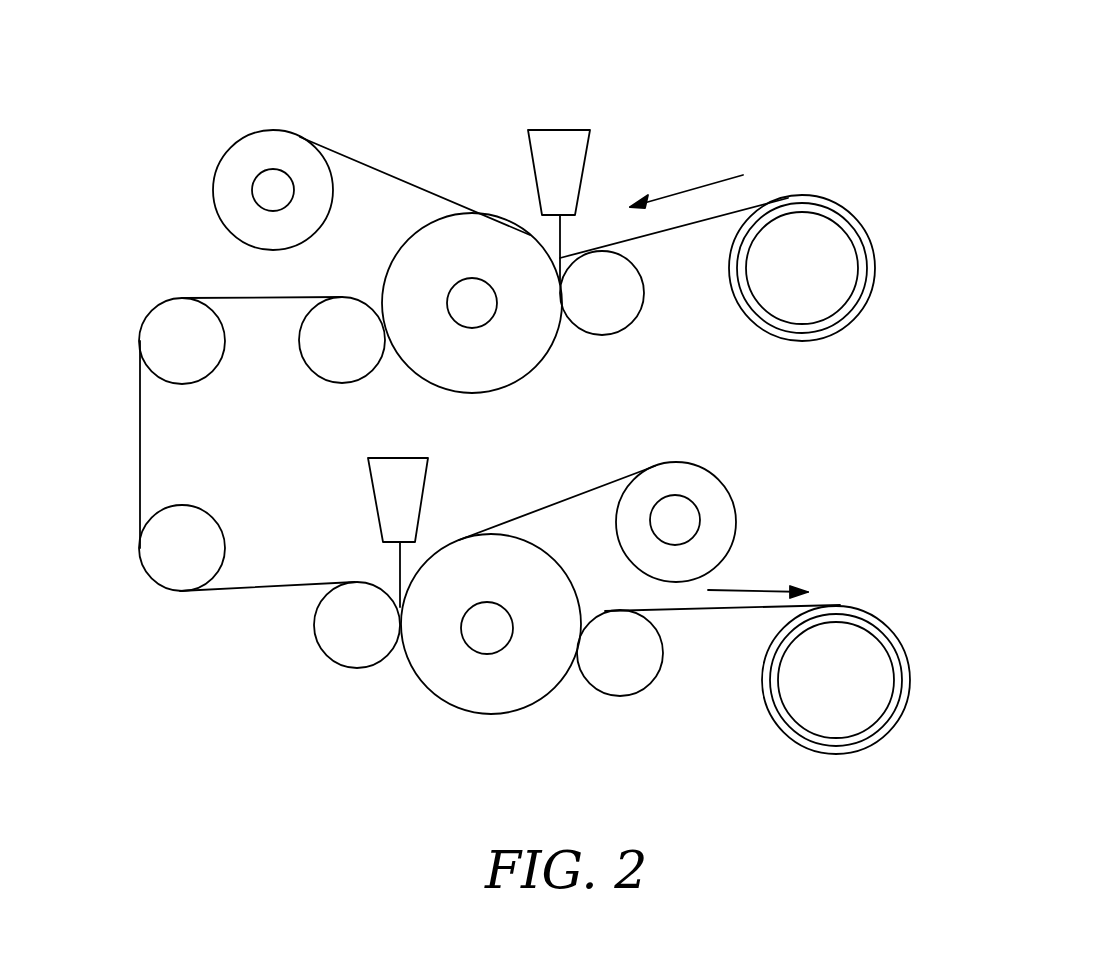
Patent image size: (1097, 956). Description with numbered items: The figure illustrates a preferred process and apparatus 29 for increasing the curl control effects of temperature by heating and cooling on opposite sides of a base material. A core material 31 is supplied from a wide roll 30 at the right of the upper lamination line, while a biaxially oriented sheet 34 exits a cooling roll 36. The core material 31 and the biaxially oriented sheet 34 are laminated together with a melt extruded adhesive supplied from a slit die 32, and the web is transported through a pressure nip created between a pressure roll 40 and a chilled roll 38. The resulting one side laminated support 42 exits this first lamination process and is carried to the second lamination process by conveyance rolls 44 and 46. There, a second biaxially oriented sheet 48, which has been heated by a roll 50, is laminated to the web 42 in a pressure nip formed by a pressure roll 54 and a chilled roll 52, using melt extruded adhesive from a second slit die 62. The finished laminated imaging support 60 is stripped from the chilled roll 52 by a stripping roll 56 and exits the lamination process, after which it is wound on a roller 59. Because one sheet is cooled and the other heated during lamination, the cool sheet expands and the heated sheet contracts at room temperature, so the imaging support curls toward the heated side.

The process and apparatus 29 is at (880, 160).
The wide roll 30 is at (842, 258).
The core material 31 is at (640, 240).
The slit die 32 is at (577, 168).
The biaxially oriented sheet 34 is at (343, 157).
The cooling roll 36 is at (247, 147).
The chilled roll 38 is at (538, 340).
The pressure roll 40 is at (627, 303).
The one side laminated support 42 is at (228, 298).
The conveyance roll 44 is at (157, 340).
The conveyance roll 46 is at (162, 555).
The biaxially oriented sheet 48 is at (558, 502).
The heating roll 50 is at (713, 498).
The chilled roll 52 is at (468, 683).
The pressure roll 54 is at (342, 655).
The stripping roll 56 is at (662, 660).
The roller 59 is at (862, 687).
The laminated imaging support 60 is at (690, 612).
The slit die 62 is at (397, 500).